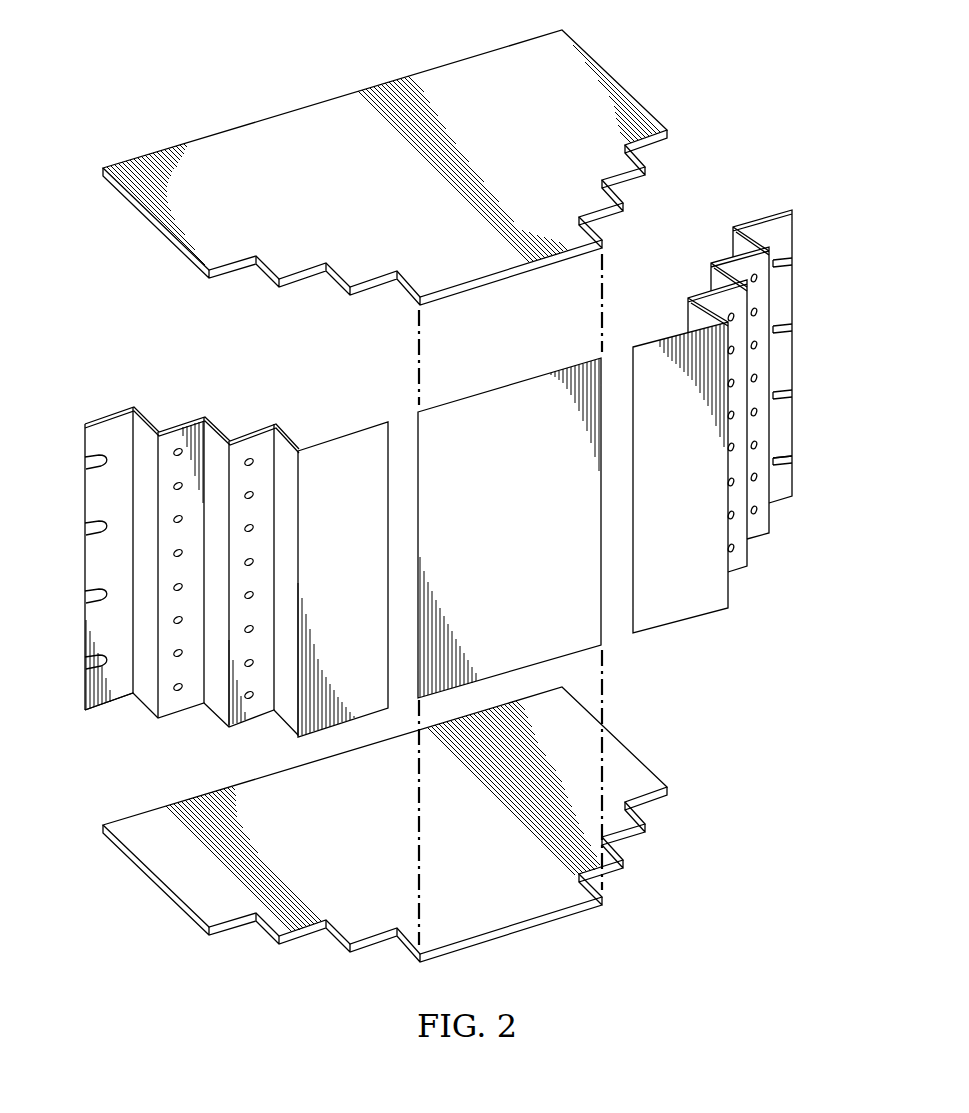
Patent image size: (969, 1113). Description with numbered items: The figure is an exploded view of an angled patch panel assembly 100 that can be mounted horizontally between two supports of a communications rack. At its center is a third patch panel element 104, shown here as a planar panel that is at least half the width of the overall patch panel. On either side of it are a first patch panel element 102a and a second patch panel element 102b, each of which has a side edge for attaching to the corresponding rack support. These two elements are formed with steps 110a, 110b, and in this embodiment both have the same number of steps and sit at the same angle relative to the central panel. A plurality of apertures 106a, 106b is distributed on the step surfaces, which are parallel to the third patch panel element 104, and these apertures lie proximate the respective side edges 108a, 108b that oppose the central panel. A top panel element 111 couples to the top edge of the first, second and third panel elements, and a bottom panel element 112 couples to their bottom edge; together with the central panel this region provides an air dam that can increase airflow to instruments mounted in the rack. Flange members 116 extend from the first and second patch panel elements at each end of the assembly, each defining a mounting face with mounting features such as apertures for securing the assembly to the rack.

The angled patch panel assembly 100 is at (203, 70).
The top panel element 111 is at (284, 126).
The bottom panel element 112 is at (495, 908).
The third patch panel element 104 is at (497, 410).
The step 110a is at (337, 437).
The step 110b is at (694, 624).
The first patch panel element 102a is at (196, 553).
The second patch panel element 102b is at (779, 372).
The apertures 106a is at (179, 447).
The apertures 106b is at (736, 386).
The side edge 108a is at (84, 567).
The side edge 108b is at (793, 421).
The flange member 116 is at (124, 692).